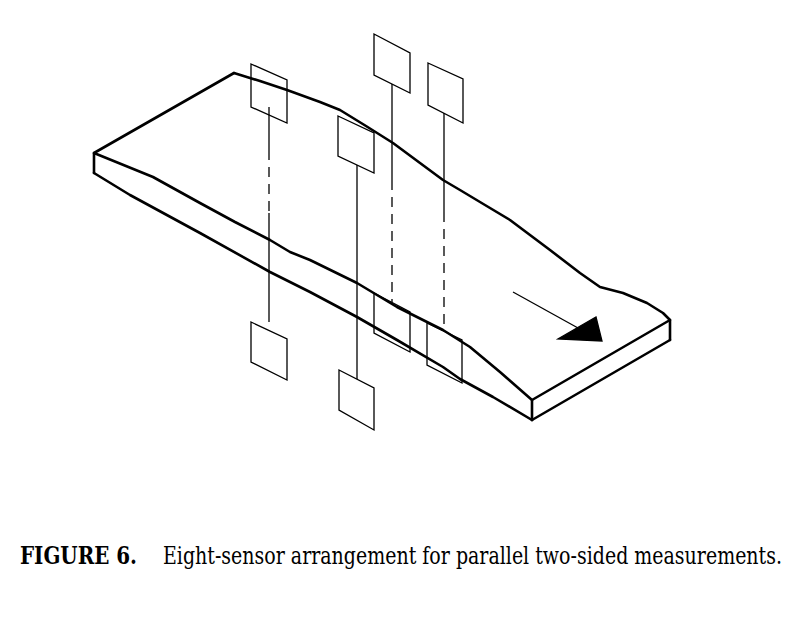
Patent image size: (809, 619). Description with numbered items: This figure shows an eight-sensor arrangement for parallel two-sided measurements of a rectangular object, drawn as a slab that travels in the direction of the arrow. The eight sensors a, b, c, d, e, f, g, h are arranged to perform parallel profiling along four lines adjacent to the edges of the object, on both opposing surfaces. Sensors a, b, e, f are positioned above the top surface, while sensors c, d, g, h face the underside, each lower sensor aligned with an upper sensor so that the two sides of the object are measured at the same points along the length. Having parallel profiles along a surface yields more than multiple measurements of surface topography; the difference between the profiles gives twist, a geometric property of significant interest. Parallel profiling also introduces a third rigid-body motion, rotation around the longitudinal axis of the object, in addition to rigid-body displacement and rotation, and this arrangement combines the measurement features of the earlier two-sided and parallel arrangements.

The sensor a is at (356, 247).
The sensor b is at (269, 193).
The sensor c is at (356, 400).
The sensor d is at (269, 351).
The sensor e is at (445, 197).
The sensor f is at (392, 168).
The sensor g is at (444, 353).
The sensor h is at (392, 322).